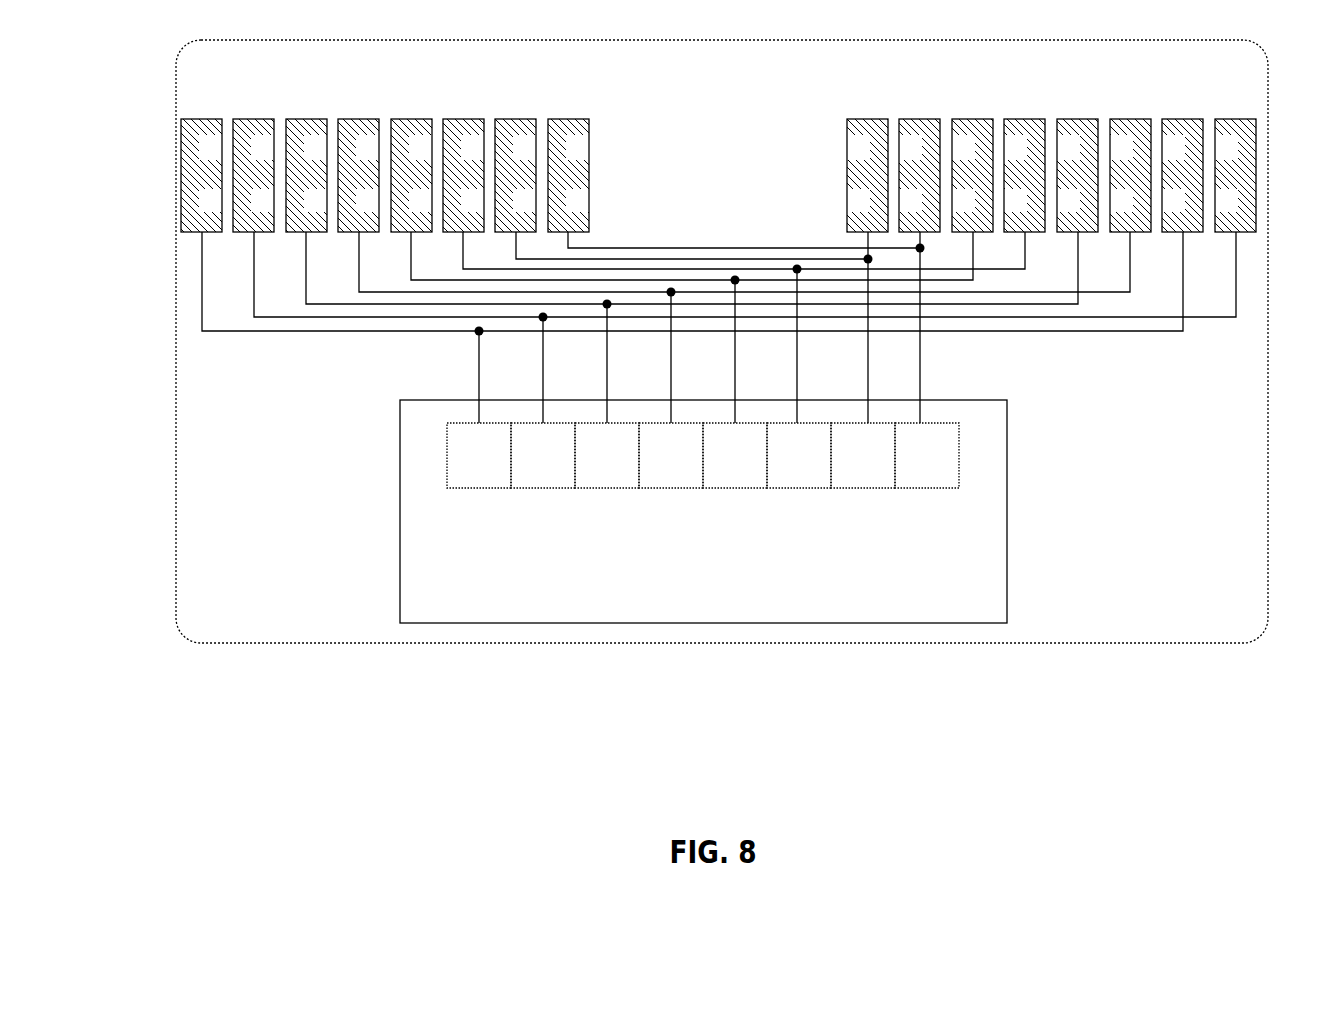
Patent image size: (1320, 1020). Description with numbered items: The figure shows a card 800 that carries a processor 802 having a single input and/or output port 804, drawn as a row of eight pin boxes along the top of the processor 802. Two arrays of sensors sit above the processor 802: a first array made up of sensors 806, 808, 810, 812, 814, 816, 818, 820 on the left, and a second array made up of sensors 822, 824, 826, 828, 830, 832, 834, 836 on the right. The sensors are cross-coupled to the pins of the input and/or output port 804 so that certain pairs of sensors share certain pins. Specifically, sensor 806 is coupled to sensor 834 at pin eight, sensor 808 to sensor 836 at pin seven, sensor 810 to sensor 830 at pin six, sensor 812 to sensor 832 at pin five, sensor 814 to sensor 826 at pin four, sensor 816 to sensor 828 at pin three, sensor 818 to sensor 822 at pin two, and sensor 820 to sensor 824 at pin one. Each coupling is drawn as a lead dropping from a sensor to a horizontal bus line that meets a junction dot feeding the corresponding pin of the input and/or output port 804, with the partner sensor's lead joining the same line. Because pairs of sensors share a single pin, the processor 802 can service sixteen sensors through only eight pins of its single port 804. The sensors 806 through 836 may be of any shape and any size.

The card 800 is at (1275, 350).
The processor 802 is at (1007, 531).
The input and/or output port 804 is at (782, 489).
The sensor 806 is at (181, 119).
The sensor 808 is at (233, 119).
The sensor 810 is at (286, 119).
The sensor 812 is at (338, 119).
The sensor 814 is at (391, 119).
The sensor 816 is at (443, 119).
The sensor 818 is at (495, 119).
The sensor 820 is at (548, 119).
The sensor 822 is at (888, 119).
The sensor 824 is at (940, 119).
The sensor 826 is at (993, 119).
The sensor 828 is at (1045, 119).
The sensor 830 is at (1098, 119).
The sensor 832 is at (1151, 119).
The sensor 834 is at (1203, 119).
The sensor 836 is at (1256, 119).